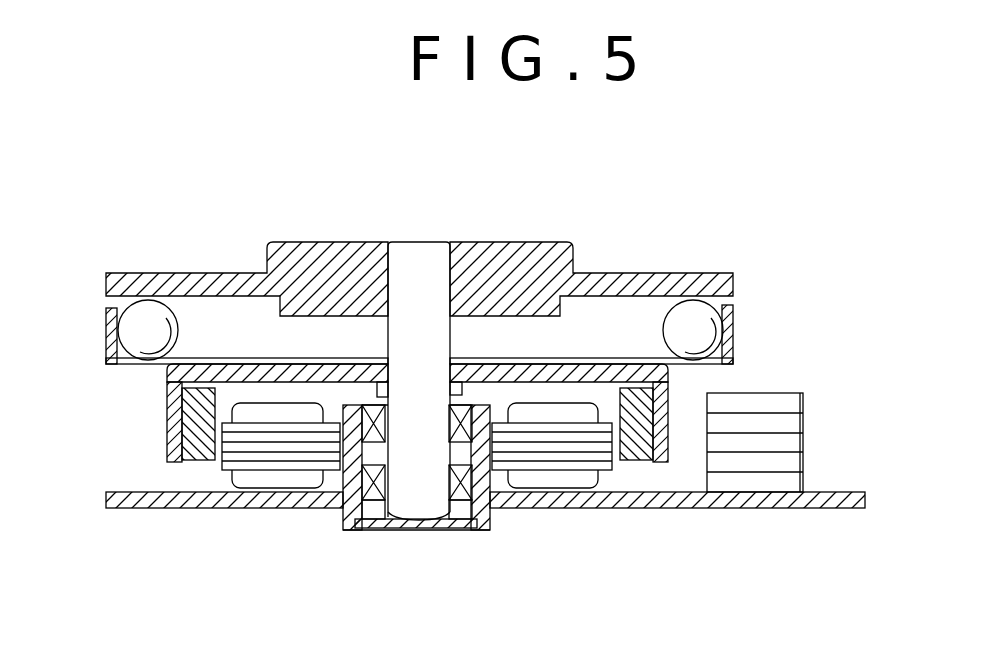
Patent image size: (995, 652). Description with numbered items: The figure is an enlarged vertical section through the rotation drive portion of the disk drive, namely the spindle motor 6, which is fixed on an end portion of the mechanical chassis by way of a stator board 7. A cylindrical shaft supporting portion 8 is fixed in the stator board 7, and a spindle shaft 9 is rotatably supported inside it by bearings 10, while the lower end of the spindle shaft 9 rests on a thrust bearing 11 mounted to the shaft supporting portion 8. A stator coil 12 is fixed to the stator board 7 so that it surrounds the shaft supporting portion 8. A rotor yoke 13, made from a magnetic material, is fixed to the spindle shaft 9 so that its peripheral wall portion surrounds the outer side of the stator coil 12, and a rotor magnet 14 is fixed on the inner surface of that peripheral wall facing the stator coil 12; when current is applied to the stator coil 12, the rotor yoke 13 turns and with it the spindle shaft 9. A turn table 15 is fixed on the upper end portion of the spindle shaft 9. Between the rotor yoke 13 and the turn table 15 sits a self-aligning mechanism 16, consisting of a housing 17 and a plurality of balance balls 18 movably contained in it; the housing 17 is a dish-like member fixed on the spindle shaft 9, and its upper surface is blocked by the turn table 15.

The spindle motor 6 is at (714, 379).
The stator board 7 is at (680, 508).
The shaft supporting portion 8 is at (490, 508).
The spindle shaft 9 is at (412, 262).
The bearings 10 is at (373, 505).
The thrust bearing 11 is at (402, 530).
The stator coil 12 is at (265, 455).
The rotor yoke 13 is at (167, 405).
The rotor magnet 14 is at (195, 462).
The turn table 15 is at (628, 272).
The self-aligning mechanism 16 is at (106, 330).
The housing 17 is at (213, 360).
The balance balls 18 is at (142, 313).